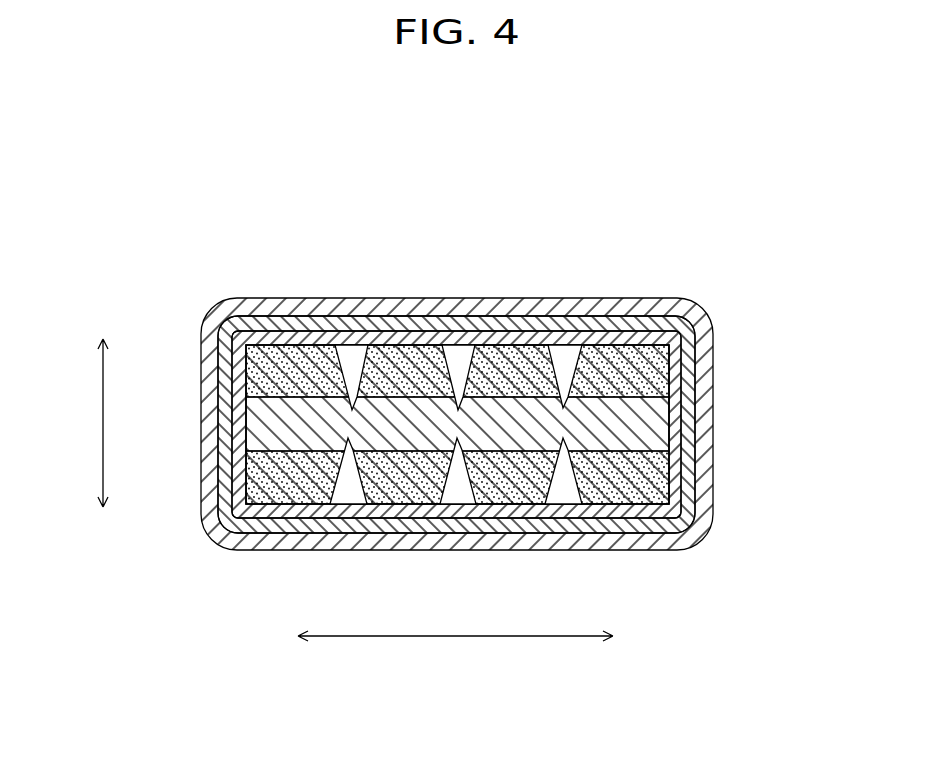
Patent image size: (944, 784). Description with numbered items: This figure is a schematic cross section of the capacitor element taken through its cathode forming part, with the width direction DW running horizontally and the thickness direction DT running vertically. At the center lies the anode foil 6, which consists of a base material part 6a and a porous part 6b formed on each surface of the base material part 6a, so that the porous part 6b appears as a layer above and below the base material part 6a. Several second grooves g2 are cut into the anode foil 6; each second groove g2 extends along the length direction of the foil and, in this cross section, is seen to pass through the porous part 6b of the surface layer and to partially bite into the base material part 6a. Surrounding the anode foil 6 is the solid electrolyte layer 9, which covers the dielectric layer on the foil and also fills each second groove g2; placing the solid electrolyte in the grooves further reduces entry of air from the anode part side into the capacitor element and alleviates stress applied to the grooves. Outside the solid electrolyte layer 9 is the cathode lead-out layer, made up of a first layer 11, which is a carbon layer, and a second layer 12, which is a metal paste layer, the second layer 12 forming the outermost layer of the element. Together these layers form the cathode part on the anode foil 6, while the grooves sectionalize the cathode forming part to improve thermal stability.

The anode foil 6 is at (812, 347).
The base material part 6a is at (642, 433).
The porous part 6b is at (660, 382).
The solid electrolyte layer 9 is at (694, 338).
The first layer 11 is at (453, 521).
The second layer 12 is at (512, 536).
The second groove g2 is at (352, 352).
The thickness direction DT is at (79, 423).
The width direction DW is at (455, 656).